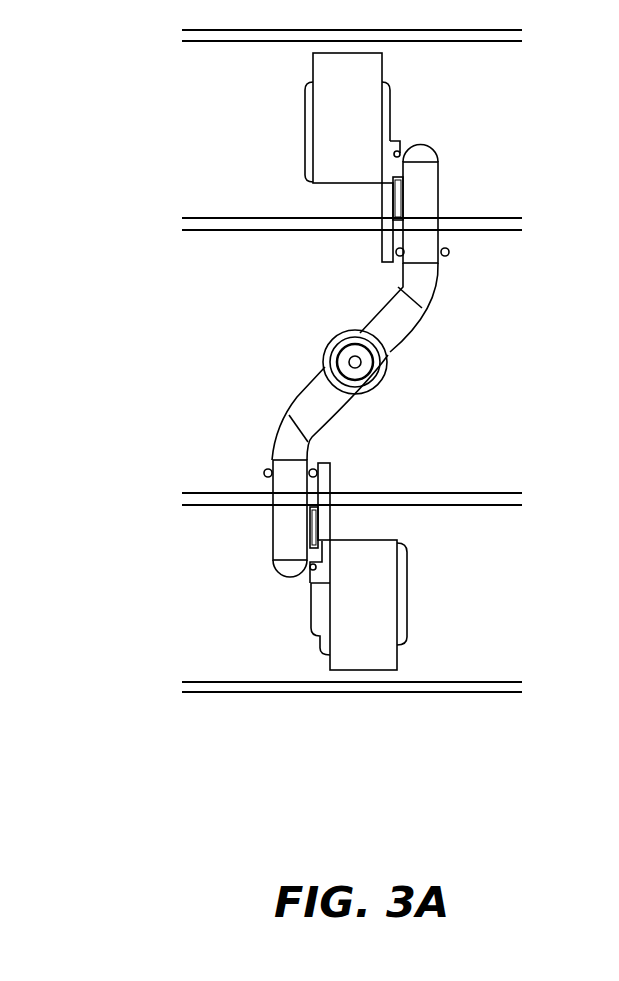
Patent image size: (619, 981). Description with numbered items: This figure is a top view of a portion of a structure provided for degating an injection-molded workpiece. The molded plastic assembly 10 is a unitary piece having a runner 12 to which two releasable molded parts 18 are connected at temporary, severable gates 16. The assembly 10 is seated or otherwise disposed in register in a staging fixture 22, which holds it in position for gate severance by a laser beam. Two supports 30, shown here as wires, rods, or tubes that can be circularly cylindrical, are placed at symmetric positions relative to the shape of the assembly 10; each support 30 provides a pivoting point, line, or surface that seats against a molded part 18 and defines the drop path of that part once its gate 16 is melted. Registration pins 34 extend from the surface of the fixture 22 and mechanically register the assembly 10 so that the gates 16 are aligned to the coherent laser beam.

The molded plastic assembly 10 is at (97, 170).
The runner 12 is at (320, 387).
The gate 16 is at (398, 153).
The molded part 18 is at (352, 129).
The staging fixture 22 is at (564, 363).
The support 30 is at (381, 194).
The registration pin 34 is at (399, 257).